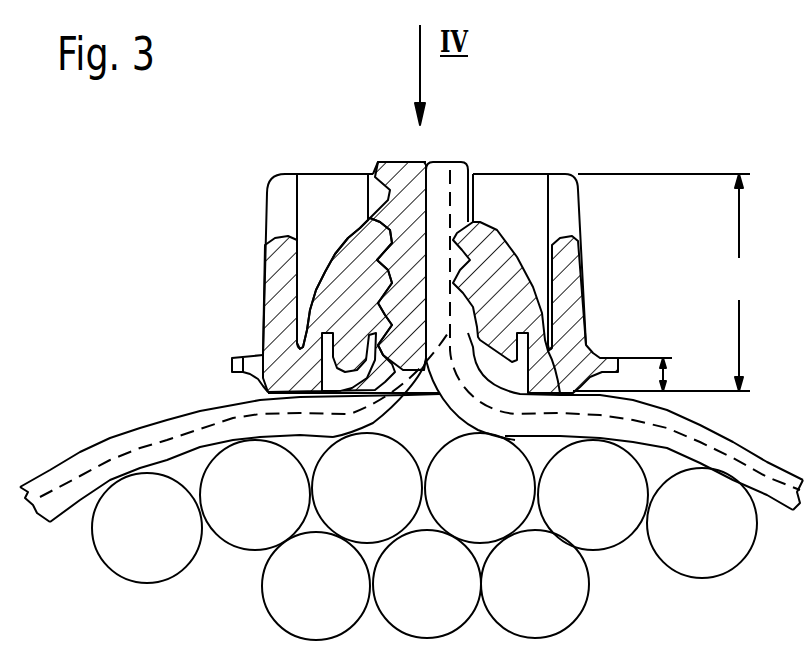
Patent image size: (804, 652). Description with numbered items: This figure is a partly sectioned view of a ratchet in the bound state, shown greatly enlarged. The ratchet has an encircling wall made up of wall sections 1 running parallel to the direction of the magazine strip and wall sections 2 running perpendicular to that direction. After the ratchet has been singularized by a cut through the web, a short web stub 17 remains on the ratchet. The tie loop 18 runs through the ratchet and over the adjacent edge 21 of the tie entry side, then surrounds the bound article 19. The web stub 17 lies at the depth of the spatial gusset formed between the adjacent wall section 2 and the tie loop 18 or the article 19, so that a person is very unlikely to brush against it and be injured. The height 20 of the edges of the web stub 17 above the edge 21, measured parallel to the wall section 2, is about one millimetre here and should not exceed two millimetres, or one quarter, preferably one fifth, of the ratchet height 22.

The wall section 1 is at (287, 174).
The wall section 2 is at (270, 268).
The web stub 17 is at (243, 360).
The tie loop 18 is at (172, 423).
The bound article 19 is at (130, 500).
The height 20 is at (657, 374).
The edge of the tie entry side 21 is at (560, 390).
The ratchet height 22 is at (663, 282).